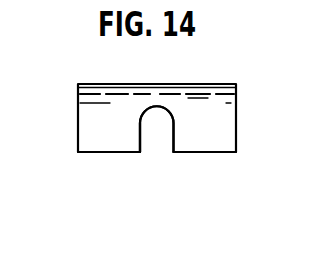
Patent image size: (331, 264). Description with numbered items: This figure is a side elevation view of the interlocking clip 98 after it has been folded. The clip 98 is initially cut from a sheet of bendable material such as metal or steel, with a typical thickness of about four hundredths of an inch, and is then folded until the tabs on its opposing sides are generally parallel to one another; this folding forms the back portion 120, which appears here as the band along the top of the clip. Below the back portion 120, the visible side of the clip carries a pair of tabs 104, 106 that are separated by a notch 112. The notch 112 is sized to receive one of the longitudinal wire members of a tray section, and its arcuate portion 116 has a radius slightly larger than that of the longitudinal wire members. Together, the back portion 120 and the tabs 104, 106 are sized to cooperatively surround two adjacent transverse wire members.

The interlocking clip 98 is at (68, 147).
The back portion 120 is at (114, 84).
The arcuate portion 116 is at (169, 110).
The tab 104 is at (108, 145).
The notch 112 is at (141, 139).
The tab 106 is at (206, 142).